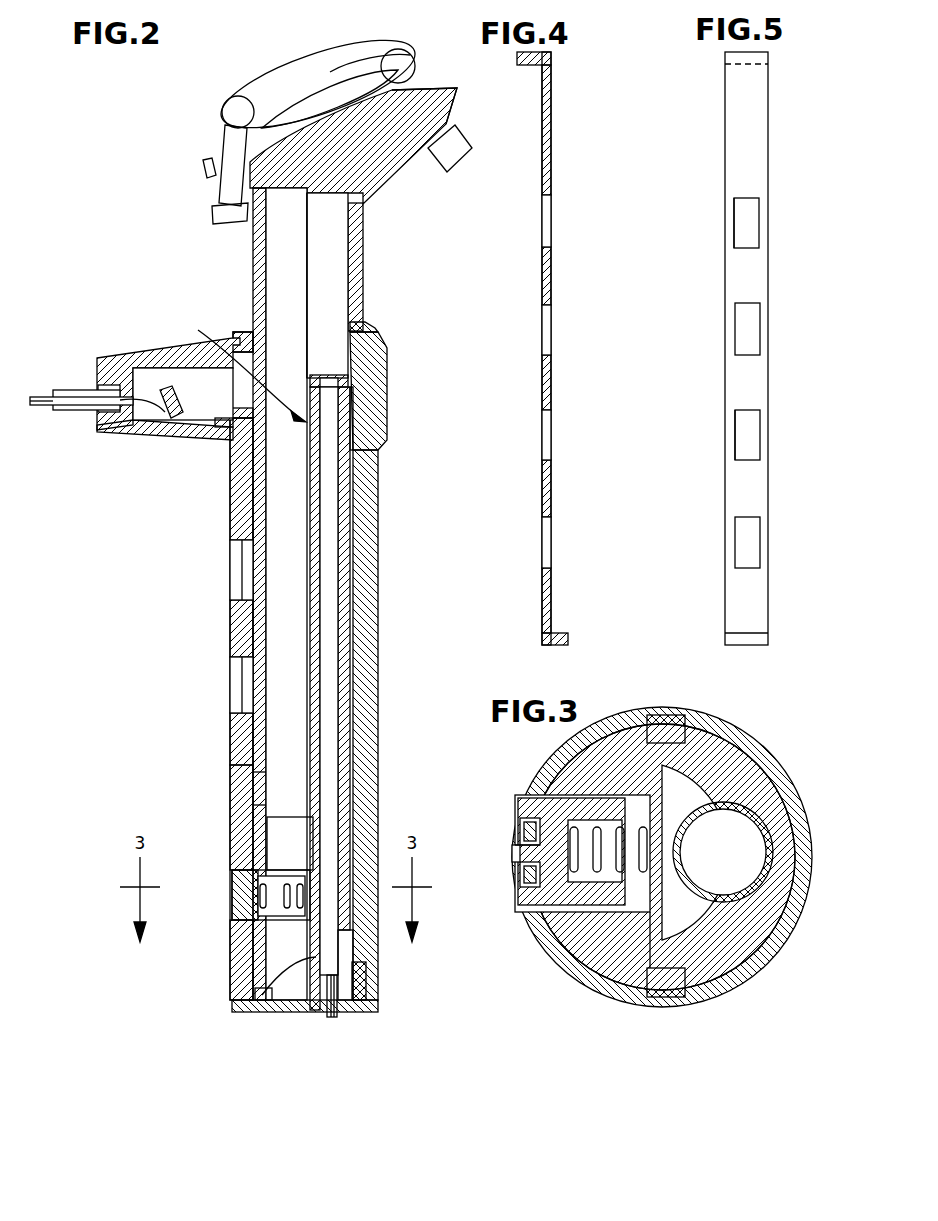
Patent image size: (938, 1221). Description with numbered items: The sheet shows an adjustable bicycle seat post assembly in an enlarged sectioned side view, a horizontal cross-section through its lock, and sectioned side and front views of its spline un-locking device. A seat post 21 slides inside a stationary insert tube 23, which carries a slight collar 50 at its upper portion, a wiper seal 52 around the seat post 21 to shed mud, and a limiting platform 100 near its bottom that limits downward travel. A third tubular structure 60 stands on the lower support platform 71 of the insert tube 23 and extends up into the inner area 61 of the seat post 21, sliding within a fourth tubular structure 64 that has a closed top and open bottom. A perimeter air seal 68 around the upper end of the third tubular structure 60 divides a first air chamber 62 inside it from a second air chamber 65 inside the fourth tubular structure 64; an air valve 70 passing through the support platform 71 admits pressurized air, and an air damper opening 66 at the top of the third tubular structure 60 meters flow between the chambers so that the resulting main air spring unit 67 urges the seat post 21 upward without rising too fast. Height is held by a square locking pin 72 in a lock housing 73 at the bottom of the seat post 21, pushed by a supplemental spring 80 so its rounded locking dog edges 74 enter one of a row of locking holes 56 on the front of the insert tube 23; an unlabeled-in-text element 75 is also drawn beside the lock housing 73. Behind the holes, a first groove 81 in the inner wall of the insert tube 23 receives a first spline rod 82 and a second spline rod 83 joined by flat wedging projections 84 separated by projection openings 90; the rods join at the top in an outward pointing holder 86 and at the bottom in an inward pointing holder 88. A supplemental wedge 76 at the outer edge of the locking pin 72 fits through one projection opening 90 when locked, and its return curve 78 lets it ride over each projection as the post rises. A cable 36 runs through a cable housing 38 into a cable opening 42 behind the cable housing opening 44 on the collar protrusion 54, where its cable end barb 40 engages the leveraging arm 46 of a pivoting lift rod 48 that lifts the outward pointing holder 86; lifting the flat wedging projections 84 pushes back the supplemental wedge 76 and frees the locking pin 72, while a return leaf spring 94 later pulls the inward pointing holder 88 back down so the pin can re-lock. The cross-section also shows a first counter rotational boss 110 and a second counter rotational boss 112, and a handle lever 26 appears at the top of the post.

In FIG. 2, the seat post 21 is at (365, 555).
In FIG. 3, the seat post 21 is at (742, 947).
In FIG. 2, the insert tube 23 is at (232, 620).
In FIG. 3, the insert tube 23 is at (725, 730).
In FIG. 2, the handle lever 26 is at (280, 117).
In FIG. 2, the cable 36 is at (40, 405).
In FIG. 2, the cable housing 38 is at (65, 397).
In FIG. 2, the cable end barb 40 is at (190, 427).
In FIG. 2, the cable opening 42 is at (120, 428).
In FIG. 2, the cable housing opening 44 is at (110, 387).
In FIG. 2, the leveraging arm 46 is at (165, 420).
In FIG. 2, the pivoting lift rod 48 is at (213, 430).
In FIG. 2, the slight collar 50 is at (376, 400).
In FIG. 2, the wiper seal 52 is at (250, 330).
In FIG. 2, the collar protrusion 54 is at (175, 350).
In FIG. 2, the locking holes 56 is at (232, 565).
In FIG. 3, the locking holes 56 is at (535, 915).
In FIG. 2, the third tubular structure 60 is at (340, 718).
In FIG. 3, the third tubular structure 60 is at (765, 878).
In FIG. 2, the inner area 61 is at (280, 301).
In FIG. 2, the first air chamber 62 is at (330, 530).
In FIG. 2, the fourth tubular structure 64 is at (307, 250).
In FIG. 2, the second air chamber 65 is at (318, 301).
In FIG. 2, the air damper opening 66 is at (350, 330).
In FIG. 2, the main air spring unit 67 is at (241, 367).
In FIG. 2, the perimeter air seal 68 is at (322, 432).
In FIG. 2, the air valve 70 is at (338, 1015).
In FIG. 2, the lower support platform 71 is at (290, 1005).
In FIG. 3, the locking pin 72 is at (575, 935).
In FIG. 2, the lock housing 73 is at (242, 770).
In FIG. 2, the locking dog edges 74 is at (243, 913).
In FIG. 3, the locking dog edges 74 is at (530, 808).
In FIG. 2, the passage 75 is at (250, 806).
In FIG. 2, the supplemental wedge 76 is at (240, 915).
In FIG. 3, the supplemental wedge 76 is at (520, 855).
In FIG. 2, the return curve 78 is at (258, 880).
In FIG. 2, the supplemental spring 80 is at (297, 875).
In FIG. 3, the supplemental spring 80 is at (627, 873).
In FIG. 3, the first groove 81 is at (528, 900).
In FIG. 3, the first spline rod 82 is at (523, 885).
In FIG. 5, the first spline rod 82 is at (732, 223).
In FIG. 3, the second spline rod 83 is at (525, 830).
In FIG. 5, the second spline rod 83 is at (760, 228).
In FIG. 2, the flat wedging projections 84 is at (232, 530).
In FIG. 4, the flat wedging projections 84 is at (548, 262).
In FIG. 5, the flat wedging projections 84 is at (750, 273).
In FIG. 2, the outward pointing holder 86 is at (226, 440).
In FIG. 4, the outward pointing holder 86 is at (528, 60).
In FIG. 5, the outward pointing holder 86 is at (756, 55).
In FIG. 2, the inward pointing holder 88 is at (263, 1003).
In FIG. 4, the inward pointing holder 88 is at (560, 640).
In FIG. 5, the inward pointing holder 88 is at (752, 640).
In FIG. 2, the projection openings 90 is at (242, 593).
In FIG. 3, the projection openings 90 is at (520, 868).
In FIG. 4, the projection openings 90 is at (548, 335).
In FIG. 5, the projection openings 90 is at (748, 333).
In FIG. 2, the return leaf spring 94 is at (293, 972).
In FIG. 2, the limiting platform 100 is at (358, 938).
In FIG. 3, the first counter rotational boss 110 is at (670, 985).
In FIG. 3, the second counter rotational boss 112 is at (665, 720).